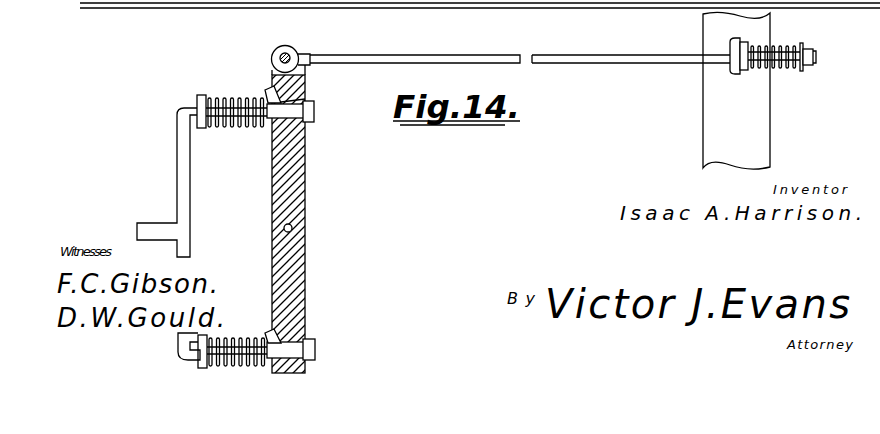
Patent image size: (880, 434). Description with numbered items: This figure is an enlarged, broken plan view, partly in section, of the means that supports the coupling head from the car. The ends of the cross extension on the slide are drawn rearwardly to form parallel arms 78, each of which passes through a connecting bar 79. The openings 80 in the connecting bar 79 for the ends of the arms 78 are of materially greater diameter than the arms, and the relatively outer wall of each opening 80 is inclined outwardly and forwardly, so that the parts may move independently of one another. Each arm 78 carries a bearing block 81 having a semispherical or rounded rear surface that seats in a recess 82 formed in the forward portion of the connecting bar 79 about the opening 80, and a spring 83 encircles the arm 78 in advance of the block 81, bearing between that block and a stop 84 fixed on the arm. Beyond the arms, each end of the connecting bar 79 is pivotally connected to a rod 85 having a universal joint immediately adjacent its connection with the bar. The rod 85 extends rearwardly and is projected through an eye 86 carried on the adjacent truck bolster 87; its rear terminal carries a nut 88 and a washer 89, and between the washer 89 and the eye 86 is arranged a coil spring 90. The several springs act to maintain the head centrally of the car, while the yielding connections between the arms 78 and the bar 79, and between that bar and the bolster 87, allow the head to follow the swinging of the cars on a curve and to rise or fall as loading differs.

The parallel arm 78 is at (288, 112).
The connecting bar 79 is at (294, 217).
The opening 80 is at (306, 100).
The bearing block 81 is at (270, 97).
The recess 82 is at (301, 62).
The spring 83 is at (242, 128).
The stop 84 is at (202, 95).
The rod 85 is at (466, 56).
The eye 86 is at (734, 72).
The truck bolster 87 is at (748, 137).
The nut 88 is at (809, 51).
The washer 89 is at (801, 43).
The coil spring 90 is at (780, 64).